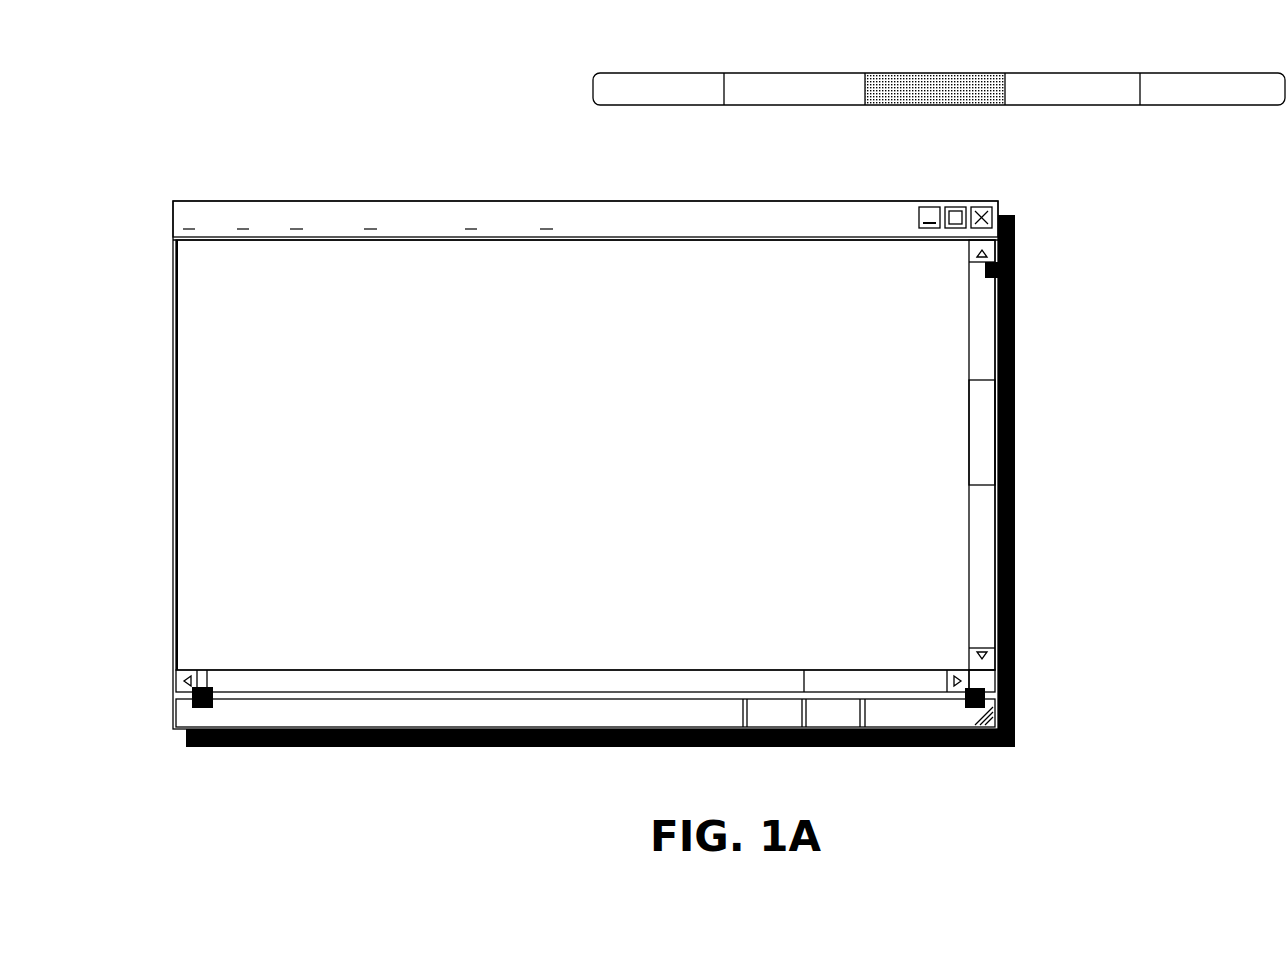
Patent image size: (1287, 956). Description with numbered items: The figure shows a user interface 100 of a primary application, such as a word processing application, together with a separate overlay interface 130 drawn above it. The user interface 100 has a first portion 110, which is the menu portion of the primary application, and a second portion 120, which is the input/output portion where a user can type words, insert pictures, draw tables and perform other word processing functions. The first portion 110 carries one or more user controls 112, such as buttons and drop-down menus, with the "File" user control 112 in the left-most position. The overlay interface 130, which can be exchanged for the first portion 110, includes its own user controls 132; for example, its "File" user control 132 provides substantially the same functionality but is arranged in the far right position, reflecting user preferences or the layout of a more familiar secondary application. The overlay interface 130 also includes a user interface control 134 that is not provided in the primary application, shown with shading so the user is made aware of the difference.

The user interface 100 is at (648, 446).
The first portion 110 is at (727, 211).
The user control 112 is at (203, 202).
The second portion 120 is at (907, 443).
The overlay interface 130 is at (916, 65).
The user control 132 is at (1198, 76).
The user interface control 134 is at (912, 72).